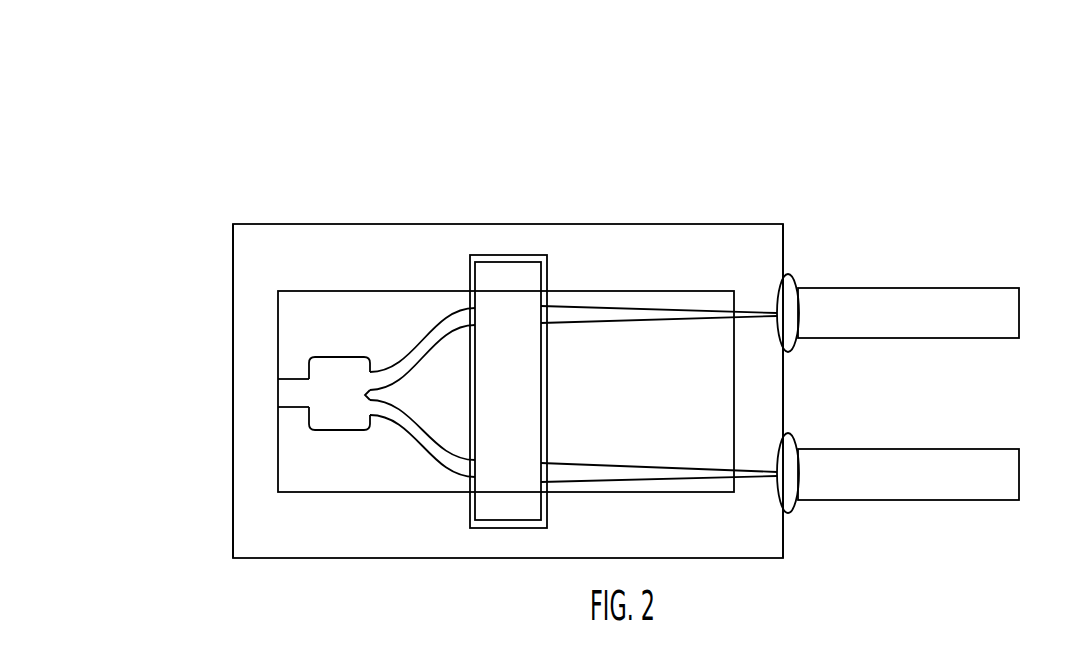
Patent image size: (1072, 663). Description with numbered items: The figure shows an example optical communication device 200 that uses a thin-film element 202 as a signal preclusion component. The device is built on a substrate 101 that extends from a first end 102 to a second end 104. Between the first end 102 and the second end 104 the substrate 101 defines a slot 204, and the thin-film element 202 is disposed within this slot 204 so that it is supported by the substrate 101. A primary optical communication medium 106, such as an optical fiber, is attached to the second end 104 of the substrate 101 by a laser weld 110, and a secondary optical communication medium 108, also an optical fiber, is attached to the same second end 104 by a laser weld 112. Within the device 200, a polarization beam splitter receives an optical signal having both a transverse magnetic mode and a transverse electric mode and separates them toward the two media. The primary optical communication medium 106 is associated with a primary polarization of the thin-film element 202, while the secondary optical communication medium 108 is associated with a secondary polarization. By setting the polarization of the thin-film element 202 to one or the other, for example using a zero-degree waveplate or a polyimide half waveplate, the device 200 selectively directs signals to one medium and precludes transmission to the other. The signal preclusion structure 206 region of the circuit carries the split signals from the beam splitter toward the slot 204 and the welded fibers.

The optical communication device 200 is at (114, 92).
The substrate 101 is at (318, 224).
The first end 102 is at (233, 268).
The second end 104 is at (787, 237).
The primary optical communication medium 106 is at (965, 288).
The secondary optical communication medium 108 is at (950, 449).
The weld 110 is at (797, 347).
The weld 112 is at (795, 510).
The thin-film element 202 is at (520, 278).
The slot 204 is at (475, 255).
The polarization beam splitter circuit 206 is at (292, 358).